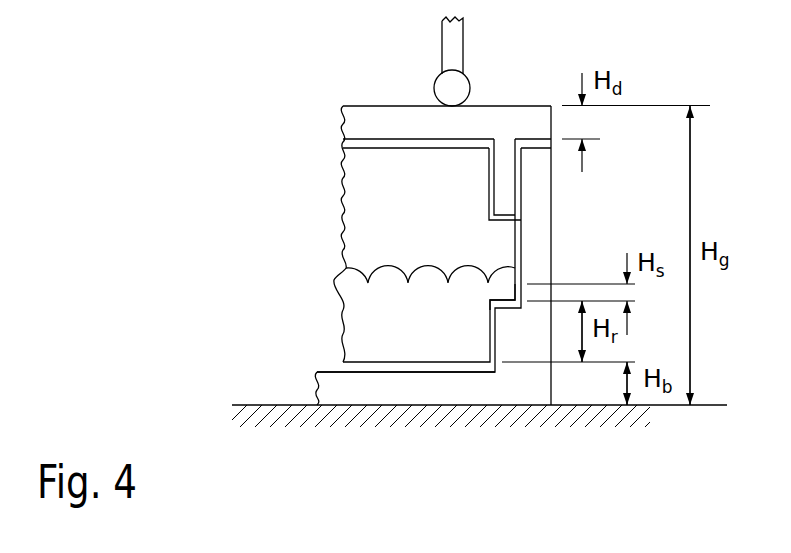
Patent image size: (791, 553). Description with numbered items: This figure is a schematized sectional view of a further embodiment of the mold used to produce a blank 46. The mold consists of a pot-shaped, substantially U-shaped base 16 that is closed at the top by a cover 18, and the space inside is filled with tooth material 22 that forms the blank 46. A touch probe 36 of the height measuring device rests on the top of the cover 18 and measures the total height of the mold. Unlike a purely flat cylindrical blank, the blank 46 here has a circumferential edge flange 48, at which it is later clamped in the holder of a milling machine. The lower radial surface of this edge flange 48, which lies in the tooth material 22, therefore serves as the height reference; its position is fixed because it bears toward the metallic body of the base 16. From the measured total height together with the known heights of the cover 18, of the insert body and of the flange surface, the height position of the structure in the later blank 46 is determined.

The base 16 is at (383, 392).
The cover 18 is at (362, 121).
The tooth material 22 is at (430, 335).
The touch probe 36 is at (452, 44).
The blank 46 is at (362, 189).
The edge flange 48 is at (502, 303).